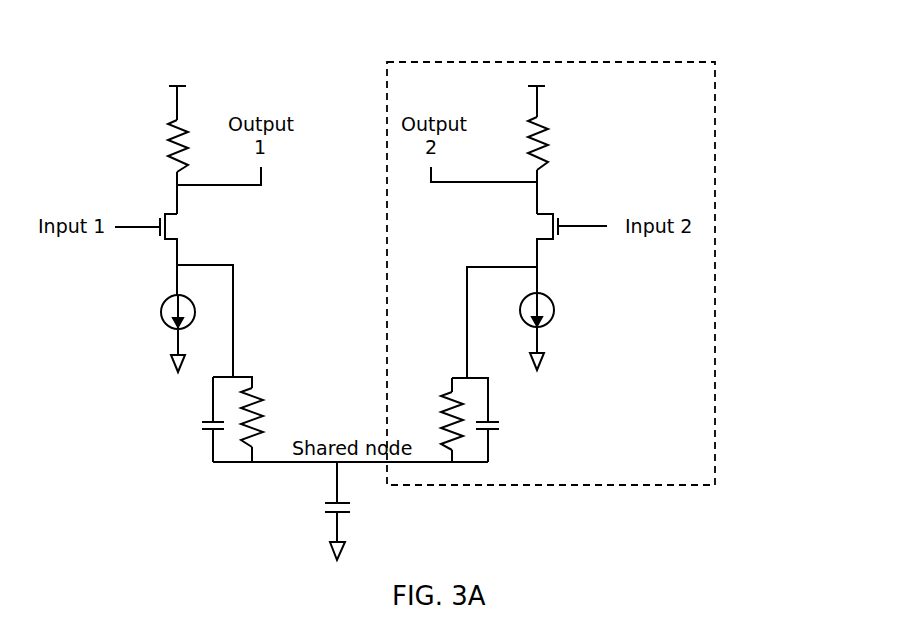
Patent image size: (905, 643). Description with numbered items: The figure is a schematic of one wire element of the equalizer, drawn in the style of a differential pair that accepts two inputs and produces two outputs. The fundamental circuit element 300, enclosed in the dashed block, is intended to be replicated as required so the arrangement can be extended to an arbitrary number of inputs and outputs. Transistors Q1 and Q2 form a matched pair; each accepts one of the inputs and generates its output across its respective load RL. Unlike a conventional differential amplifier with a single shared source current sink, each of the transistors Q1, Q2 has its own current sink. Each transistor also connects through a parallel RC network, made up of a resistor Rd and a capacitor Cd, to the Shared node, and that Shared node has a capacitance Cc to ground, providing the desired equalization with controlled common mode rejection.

The fundamental circuit element 300 is at (680, 62).
The transistor Q1 is at (173, 251).
The transistor Q2 is at (549, 251).
The load RL is at (338, 144).
The resistor of parallel RC network Rd is at (352, 416).
The capacitor of parallel RC network Cd is at (351, 436).
The capacitance to ground Cc is at (356, 511).